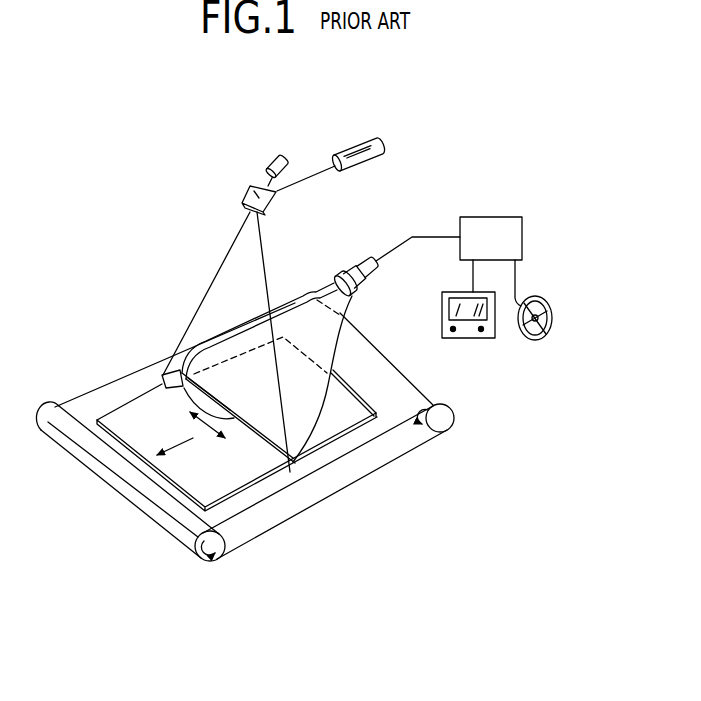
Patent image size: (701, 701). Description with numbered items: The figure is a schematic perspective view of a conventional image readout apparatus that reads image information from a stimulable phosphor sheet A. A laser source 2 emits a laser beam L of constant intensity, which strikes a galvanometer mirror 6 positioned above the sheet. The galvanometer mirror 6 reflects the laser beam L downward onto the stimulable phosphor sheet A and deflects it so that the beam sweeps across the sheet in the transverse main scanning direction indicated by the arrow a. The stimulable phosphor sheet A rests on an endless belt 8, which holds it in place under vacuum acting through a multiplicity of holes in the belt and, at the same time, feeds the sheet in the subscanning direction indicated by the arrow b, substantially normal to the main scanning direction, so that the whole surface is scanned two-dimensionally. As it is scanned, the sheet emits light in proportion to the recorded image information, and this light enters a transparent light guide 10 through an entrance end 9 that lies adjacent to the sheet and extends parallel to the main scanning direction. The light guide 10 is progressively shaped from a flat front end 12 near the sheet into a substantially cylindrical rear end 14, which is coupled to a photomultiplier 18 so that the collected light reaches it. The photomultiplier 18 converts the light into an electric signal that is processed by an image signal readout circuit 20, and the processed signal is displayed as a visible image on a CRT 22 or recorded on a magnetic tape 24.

The laser source 2 is at (358, 142).
The laser beam L is at (317, 175).
The galvanometer mirror 6 is at (248, 193).
The endless belt 8 is at (447, 402).
The entrance end 9 is at (175, 378).
The transparent light guide 10 is at (318, 338).
The flat front end 12 is at (208, 380).
The rear end 14 is at (362, 288).
The photomultiplier 18 is at (357, 266).
The image signal readout circuit 20 is at (492, 217).
The CRT 22 is at (482, 338).
The magnetic tape 24 is at (540, 338).
The stimulable phosphor sheet A is at (143, 418).
The main scanning direction a is at (215, 436).
The subscanning direction b is at (175, 454).